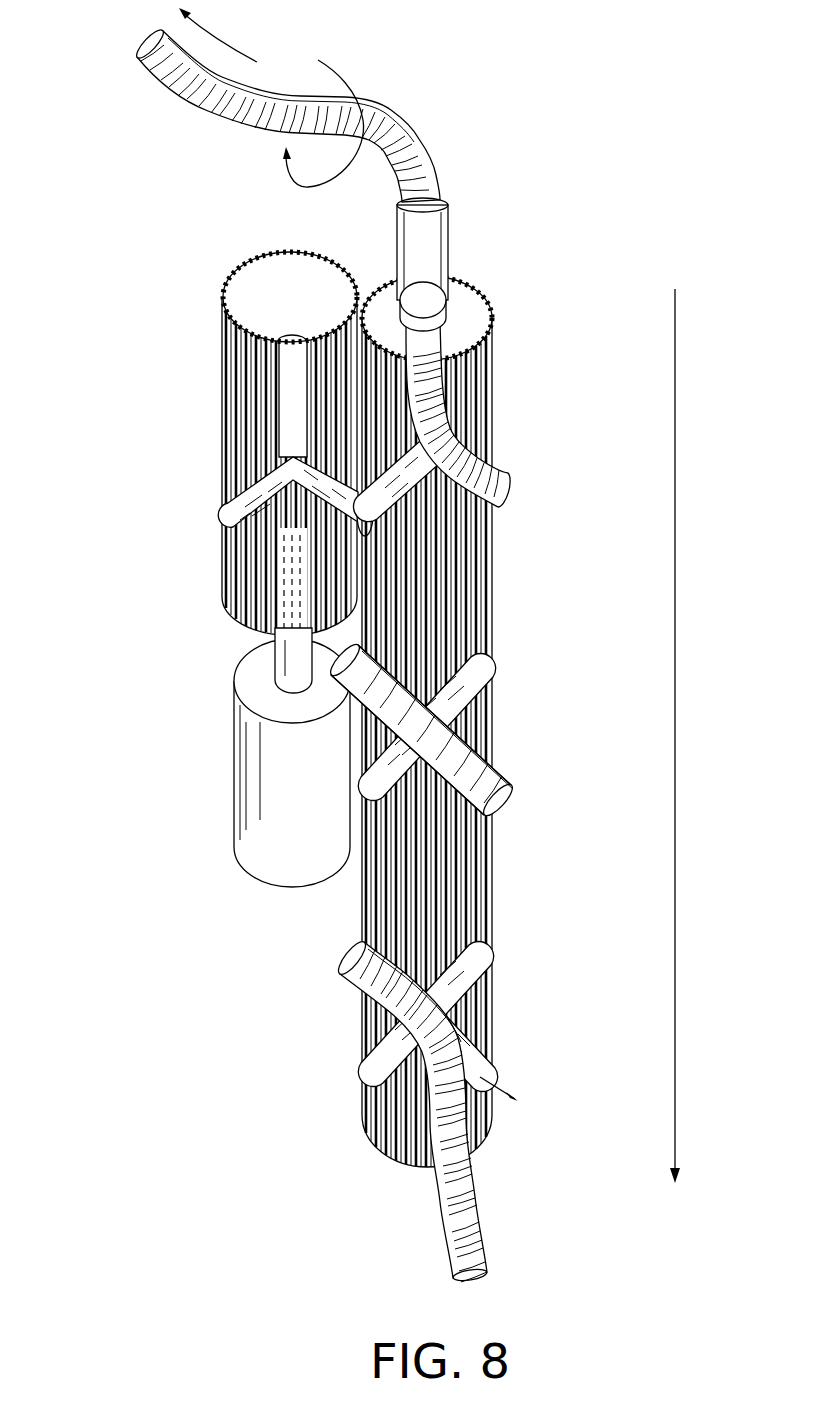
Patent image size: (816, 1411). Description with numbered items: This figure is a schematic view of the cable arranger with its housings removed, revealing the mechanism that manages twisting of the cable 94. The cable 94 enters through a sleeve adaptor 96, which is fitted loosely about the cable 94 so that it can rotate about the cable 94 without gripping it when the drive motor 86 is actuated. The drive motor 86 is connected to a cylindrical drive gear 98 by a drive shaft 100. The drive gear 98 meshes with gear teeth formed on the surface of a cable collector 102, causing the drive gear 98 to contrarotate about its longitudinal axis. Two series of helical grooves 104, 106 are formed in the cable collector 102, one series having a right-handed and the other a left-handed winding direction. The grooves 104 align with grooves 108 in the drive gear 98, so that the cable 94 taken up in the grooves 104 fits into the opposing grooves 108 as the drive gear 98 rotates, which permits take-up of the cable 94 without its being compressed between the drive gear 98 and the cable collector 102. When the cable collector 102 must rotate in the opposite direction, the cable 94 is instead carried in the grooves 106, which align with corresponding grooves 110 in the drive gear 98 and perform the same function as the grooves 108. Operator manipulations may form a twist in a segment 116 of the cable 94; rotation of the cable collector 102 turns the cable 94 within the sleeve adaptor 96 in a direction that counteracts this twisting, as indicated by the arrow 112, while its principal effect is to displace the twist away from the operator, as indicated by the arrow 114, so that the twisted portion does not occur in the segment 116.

The drive motor 86 is at (235, 748).
The cable 94 is at (212, 115).
The sleeve adaptor 96 is at (448, 240).
The cylindrical drive gear 98 is at (244, 446).
The drive shaft 100 is at (250, 700).
The cable collector 102 is at (497, 535).
The helical grooves 104 is at (488, 753).
The helical grooves 106 is at (485, 655).
The grooves 108 is at (243, 440).
The grooves 110 is at (228, 510).
The arrow 112 is at (270, 114).
The arrow 114 is at (675, 787).
The segment 116 is at (377, 217).